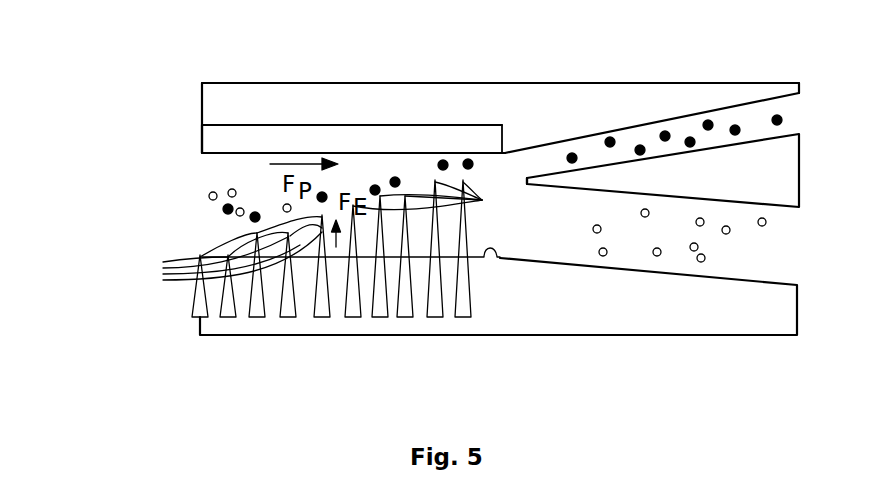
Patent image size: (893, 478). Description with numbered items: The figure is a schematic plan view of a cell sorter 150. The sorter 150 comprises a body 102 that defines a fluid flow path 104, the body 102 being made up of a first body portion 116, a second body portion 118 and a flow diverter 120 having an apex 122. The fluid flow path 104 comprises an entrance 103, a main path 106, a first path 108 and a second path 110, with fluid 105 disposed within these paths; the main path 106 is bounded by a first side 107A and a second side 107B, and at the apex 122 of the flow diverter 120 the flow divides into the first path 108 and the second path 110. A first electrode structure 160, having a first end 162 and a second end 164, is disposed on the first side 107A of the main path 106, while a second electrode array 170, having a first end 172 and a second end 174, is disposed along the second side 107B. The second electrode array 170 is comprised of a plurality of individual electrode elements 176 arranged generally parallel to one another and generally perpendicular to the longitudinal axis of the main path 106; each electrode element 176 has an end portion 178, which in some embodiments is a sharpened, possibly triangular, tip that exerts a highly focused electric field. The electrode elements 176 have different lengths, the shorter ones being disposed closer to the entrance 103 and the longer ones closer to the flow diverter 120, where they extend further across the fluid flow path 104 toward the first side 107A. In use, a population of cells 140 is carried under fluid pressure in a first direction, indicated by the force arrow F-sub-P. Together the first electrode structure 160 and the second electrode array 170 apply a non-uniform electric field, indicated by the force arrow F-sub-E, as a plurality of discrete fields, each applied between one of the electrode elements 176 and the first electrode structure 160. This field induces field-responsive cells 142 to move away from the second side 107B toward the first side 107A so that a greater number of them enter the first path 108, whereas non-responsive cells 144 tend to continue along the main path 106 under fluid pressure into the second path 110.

The body 102 is at (622, 94).
The entrance 103 is at (205, 212).
The fluid flow path 104 is at (207, 252).
The fluid 105 is at (673, 240).
The main path 106 is at (258, 165).
The first side 107A is at (202, 153).
The second side 107B is at (497, 257).
The first path 108 is at (762, 120).
The second path 110 is at (773, 252).
The first body portion 116 is at (548, 110).
The second body portion 118 is at (548, 338).
The flow diverter 120 is at (800, 170).
The apex 122 is at (530, 186).
The cells 140 is at (200, 196).
The field-responsive cells 142 is at (707, 118).
The non-responsive cells 144 is at (770, 223).
The sorter 150 is at (508, 83).
The first electrode structure 160 is at (358, 125).
The first end 162 is at (218, 125).
The second end 164 is at (490, 128).
The second electrode array 170 is at (300, 340).
The first end 172 is at (200, 292).
The second end 174 is at (470, 284).
The electrode elements 176 is at (257, 317).
The end portion 178 is at (326, 234).